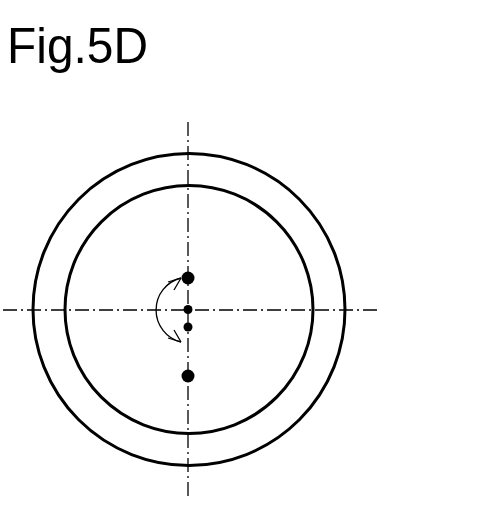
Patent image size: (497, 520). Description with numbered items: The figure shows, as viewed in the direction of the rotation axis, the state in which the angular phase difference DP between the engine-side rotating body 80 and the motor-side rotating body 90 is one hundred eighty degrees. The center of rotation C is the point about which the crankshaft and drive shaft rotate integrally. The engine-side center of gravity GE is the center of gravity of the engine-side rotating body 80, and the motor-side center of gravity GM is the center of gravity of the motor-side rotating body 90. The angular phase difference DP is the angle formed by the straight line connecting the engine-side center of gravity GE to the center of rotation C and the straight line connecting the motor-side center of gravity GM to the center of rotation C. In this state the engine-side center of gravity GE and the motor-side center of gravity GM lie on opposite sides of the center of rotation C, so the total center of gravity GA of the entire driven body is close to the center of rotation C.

The motor-side rotating body 90 is at (266, 168).
The engine-side rotating body 80 is at (290, 233).
The engine-side center of gravity GE is at (194, 276).
The center of rotation C is at (193, 306).
The total center of gravity GA is at (193, 327).
The motor-side center of gravity GM is at (193, 378).
The angular phase difference DP is at (150, 314).